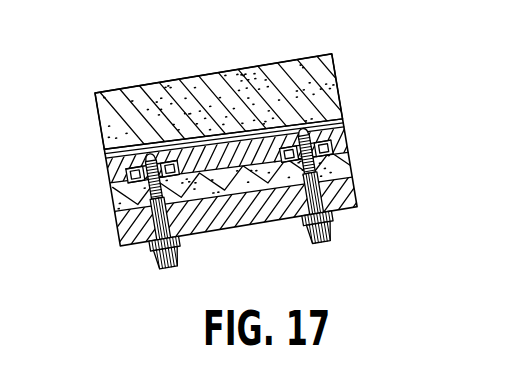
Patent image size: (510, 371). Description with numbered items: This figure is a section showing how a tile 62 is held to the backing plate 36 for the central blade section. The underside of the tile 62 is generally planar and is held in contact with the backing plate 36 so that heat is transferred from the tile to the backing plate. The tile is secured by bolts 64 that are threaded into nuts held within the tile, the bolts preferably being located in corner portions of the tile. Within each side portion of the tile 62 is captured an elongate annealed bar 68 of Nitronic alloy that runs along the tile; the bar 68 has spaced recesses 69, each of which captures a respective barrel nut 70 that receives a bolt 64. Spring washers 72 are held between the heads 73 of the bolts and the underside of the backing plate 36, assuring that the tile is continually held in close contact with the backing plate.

The tile 62 is at (155, 93).
The backing plate 36 is at (234, 228).
The elongate annealed bar 68 is at (341, 136).
The bolt 64 is at (134, 250).
The recess 69 is at (120, 183).
The barrel nut 70 is at (142, 161).
The spring washer 72 is at (181, 244).
The head 73 is at (162, 266).